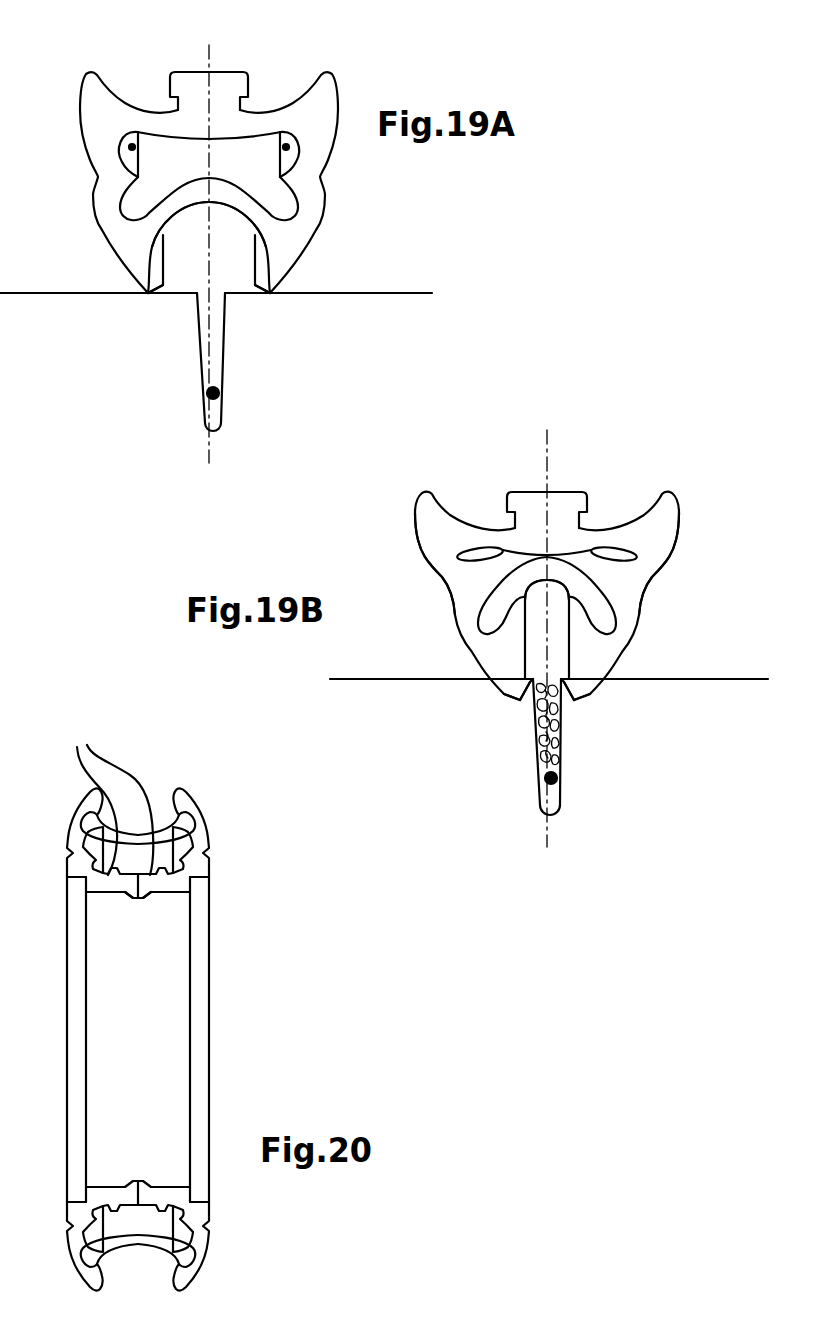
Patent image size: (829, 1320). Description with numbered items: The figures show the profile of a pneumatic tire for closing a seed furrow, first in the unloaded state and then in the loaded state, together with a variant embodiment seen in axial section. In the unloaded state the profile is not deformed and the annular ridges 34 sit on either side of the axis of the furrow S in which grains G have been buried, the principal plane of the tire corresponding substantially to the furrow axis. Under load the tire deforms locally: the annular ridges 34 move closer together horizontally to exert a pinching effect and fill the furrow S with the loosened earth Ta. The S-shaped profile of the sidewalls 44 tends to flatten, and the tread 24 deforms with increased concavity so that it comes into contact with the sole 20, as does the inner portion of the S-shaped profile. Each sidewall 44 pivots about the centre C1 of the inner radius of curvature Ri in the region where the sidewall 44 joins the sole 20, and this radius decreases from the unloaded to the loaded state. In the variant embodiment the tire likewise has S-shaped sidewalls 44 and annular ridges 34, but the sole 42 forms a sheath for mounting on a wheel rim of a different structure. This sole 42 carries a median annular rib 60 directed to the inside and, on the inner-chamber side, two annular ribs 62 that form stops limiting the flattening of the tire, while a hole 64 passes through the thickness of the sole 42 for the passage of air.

In FIG. 19A, the sole 20 is at (230, 124).
In FIG. 19B, the sole 20 is at (563, 537).
In FIG. 19A, the tread 24 is at (187, 193).
In FIG. 19B, the tread 24 is at (558, 572).
In FIG. 19A, the annular ridges 34 is at (148, 279).
In FIG. 19B, the annular ridges 34 is at (510, 688).
In FIG. 19B, the sidewalls 44 is at (463, 587).
In FIG. 20, the sole 42 is at (117, 896).
In FIG. 20, the median annular rib 60 is at (140, 1182).
In FIG. 20, the annular ribs 62 is at (136, 806).
In FIG. 20, the hole 64 is at (143, 899).
In FIG. 19A, the inner radius of curvature Ri is at (333, 40).
In FIG. 19B, the inner radius of curvature Ri is at (617, 545).
In FIG. 19A, the centre of the inner radius of curvature C1 is at (240, 232).
In FIG. 19A, the furrow S is at (218, 347).
In FIG. 19A, the grains G is at (207, 393).
In FIG. 19B, the grains G is at (557, 778).
In FIG. 19B, the loosened earth Ta is at (563, 730).